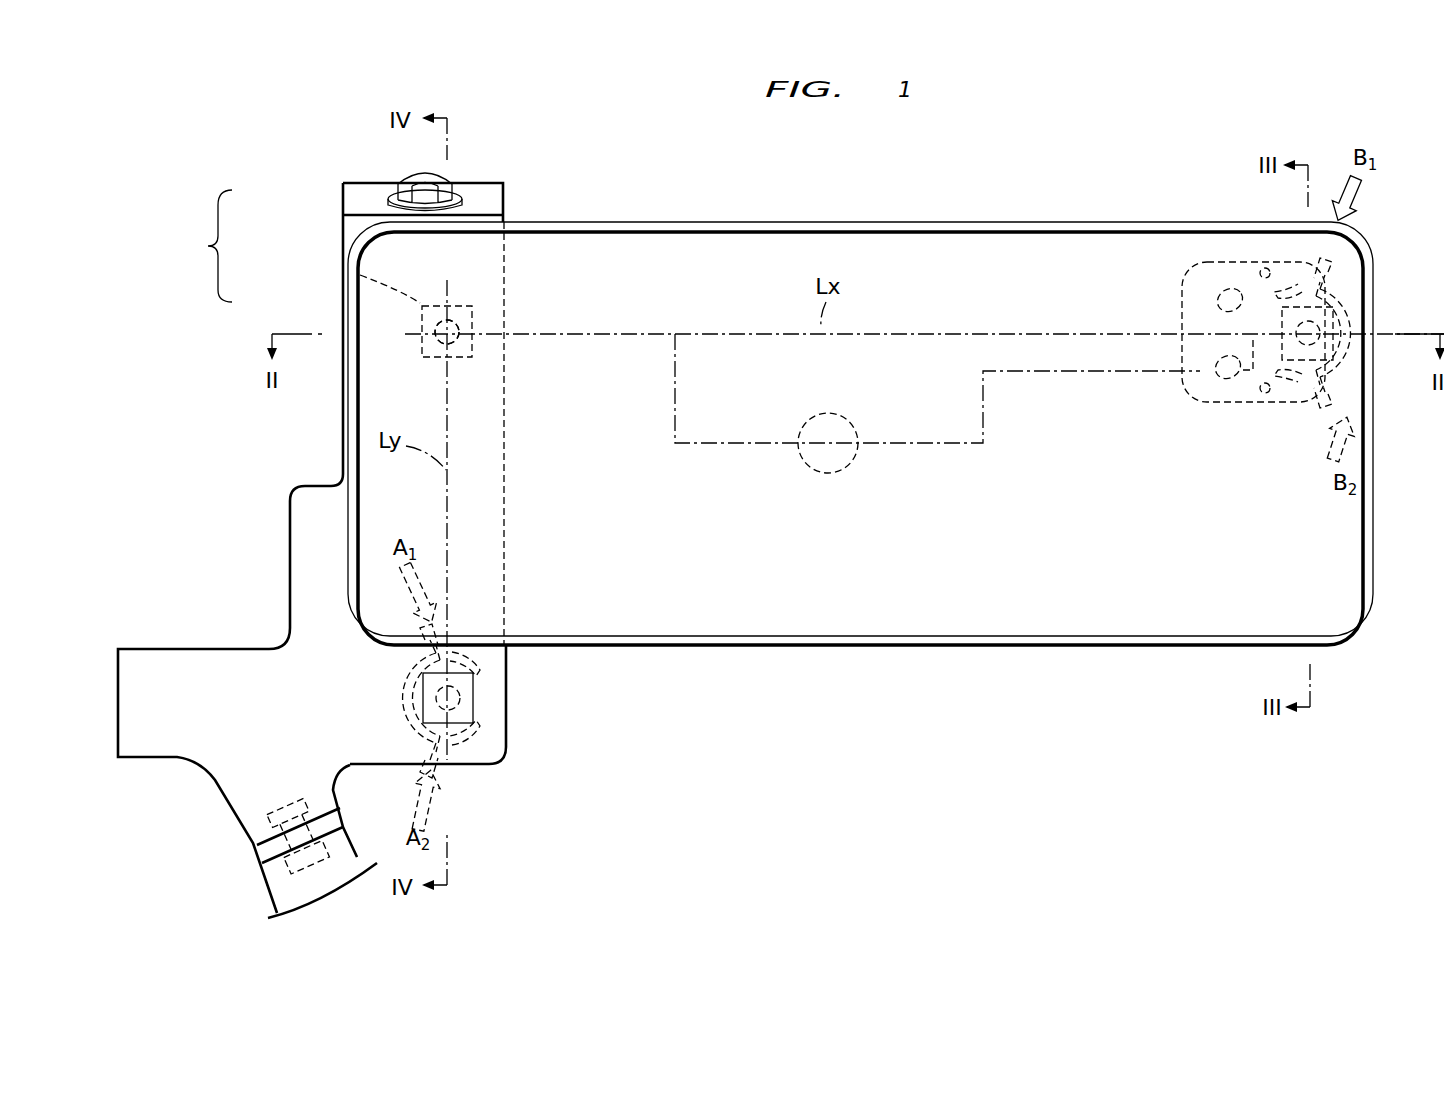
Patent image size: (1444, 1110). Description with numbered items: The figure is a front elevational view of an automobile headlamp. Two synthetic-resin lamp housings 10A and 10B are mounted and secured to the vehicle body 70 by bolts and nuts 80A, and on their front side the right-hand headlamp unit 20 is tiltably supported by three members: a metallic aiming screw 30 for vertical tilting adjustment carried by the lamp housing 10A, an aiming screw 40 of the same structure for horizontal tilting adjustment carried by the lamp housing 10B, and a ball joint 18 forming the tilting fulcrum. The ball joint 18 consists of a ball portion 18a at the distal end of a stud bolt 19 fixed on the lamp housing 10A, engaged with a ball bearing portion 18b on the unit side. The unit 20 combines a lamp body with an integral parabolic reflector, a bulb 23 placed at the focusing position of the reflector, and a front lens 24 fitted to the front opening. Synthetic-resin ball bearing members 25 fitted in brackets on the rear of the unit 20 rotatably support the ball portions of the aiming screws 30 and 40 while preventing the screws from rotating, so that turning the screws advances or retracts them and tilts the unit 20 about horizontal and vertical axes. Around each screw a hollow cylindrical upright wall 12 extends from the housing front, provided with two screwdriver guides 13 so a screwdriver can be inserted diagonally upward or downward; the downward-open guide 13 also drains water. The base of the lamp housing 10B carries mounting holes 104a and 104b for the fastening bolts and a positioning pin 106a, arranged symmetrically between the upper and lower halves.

The lamp housing 10A is at (291, 523).
The lamp housing 10B is at (1207, 265).
The upright wall 12 is at (402, 697).
The screwdriver guide 13 is at (422, 636).
The ball joint 18 is at (207, 246).
The ball portion 18a is at (435, 330).
The ball bearing portion 18b is at (422, 305).
The stud bolt 19 is at (447, 332).
The headlamp unit 20 is at (738, 646).
The bulb 23 is at (827, 475).
The front lens 24 is at (1052, 612).
The ball bearing member 25 is at (476, 710).
The aiming screw 30 is at (478, 694).
The aiming screw 40 is at (1338, 316).
The vehicle body 70 is at (267, 882).
The bolts and nuts 80A is at (392, 176).
The mounting hole 104a is at (1222, 382).
The mounting hole 104b is at (1212, 303).
The positioning pin 106a is at (1262, 266).